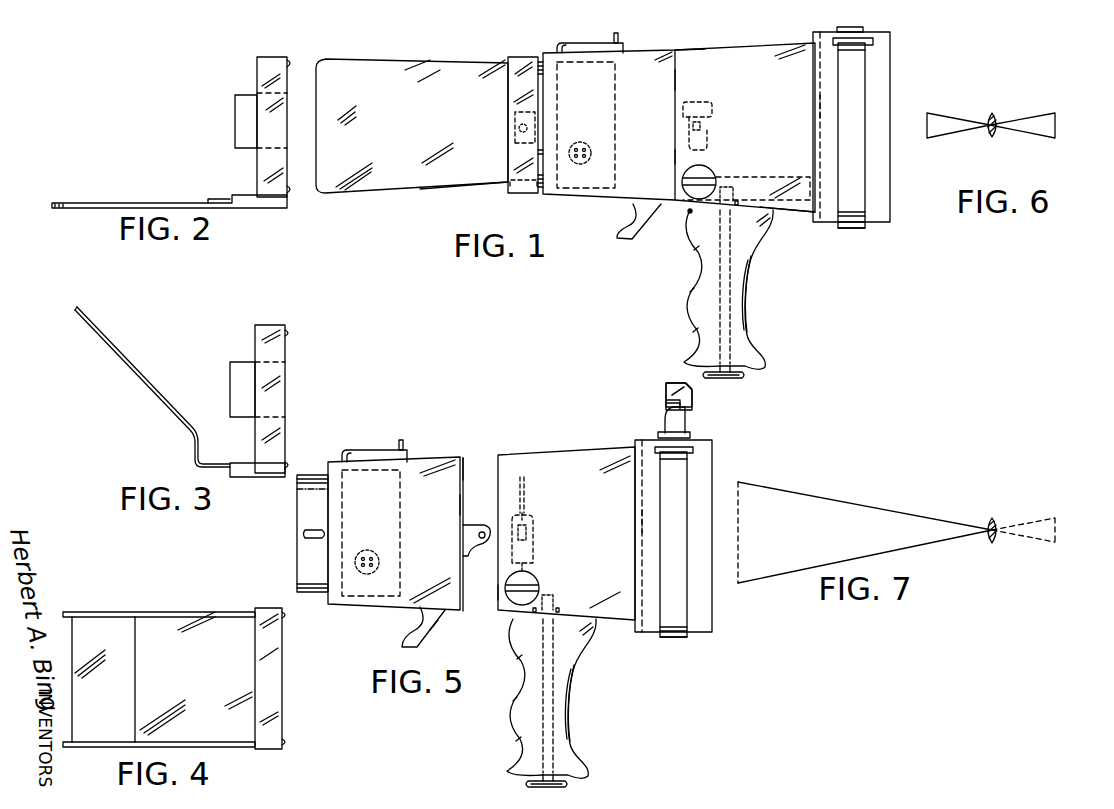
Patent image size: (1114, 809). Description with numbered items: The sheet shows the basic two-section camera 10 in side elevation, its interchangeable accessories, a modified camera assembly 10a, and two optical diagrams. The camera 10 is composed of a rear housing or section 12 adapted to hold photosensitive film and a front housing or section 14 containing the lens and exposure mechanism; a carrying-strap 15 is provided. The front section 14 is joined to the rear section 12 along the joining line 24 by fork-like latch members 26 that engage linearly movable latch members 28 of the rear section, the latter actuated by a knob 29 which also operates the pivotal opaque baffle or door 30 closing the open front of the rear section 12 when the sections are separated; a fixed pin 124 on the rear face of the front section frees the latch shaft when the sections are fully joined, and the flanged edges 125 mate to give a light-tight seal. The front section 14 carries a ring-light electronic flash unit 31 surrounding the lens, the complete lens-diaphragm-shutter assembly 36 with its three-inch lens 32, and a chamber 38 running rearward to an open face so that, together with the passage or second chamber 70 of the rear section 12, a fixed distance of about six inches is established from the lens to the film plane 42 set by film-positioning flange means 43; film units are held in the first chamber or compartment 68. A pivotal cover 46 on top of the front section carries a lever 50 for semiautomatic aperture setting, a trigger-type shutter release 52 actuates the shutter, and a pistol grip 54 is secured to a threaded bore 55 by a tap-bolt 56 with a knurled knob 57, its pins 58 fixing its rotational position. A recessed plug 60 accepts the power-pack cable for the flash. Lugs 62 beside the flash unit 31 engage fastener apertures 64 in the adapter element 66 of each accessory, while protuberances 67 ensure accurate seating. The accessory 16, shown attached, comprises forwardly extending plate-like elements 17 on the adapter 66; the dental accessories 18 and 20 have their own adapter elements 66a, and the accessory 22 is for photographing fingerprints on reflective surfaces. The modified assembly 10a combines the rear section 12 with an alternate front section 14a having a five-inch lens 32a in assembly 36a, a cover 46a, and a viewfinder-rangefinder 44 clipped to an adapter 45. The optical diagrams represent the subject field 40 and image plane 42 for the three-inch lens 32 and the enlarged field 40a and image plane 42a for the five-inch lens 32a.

In FIG. 1, the camera 10 is at (809, 249).
In FIG. 5, the camera assembly 10a is at (655, 668).
In FIG. 1, the rear housing or section 12 is at (812, 216).
In FIG. 5, the rear housing or section 12 is at (620, 619).
In FIG. 1, the front housing or section 14 is at (645, 44).
In FIG. 5, the alternate front section 14a is at (372, 607).
In FIG. 1, the carrying-strap 15 is at (850, 162).
In FIG. 5, the carrying-strap 15 is at (677, 490).
In FIG. 1, the accessory 16 is at (428, 195).
In FIG. 1, the plate-like elements 17 is at (342, 194).
In FIG. 2, the accessory 18 is at (179, 176).
In FIG. 3, the accessory 20 is at (150, 362).
In FIG. 4, the accessory 22 is at (167, 681).
In FIG. 1, the joining line 24 is at (678, 60).
In FIG. 1, the latch members 26 is at (713, 108).
In FIG. 5, the latch members 26 is at (478, 550).
In FIG. 1, the latch members 28 is at (708, 134).
In FIG. 5, the latch members 28 is at (535, 532).
In FIG. 1, the knob 29 is at (682, 180).
In FIG. 5, the knob 29 is at (539, 586).
In FIG. 1, the baffle or door 30 is at (805, 176).
In FIG. 5, the baffle or door 30 is at (526, 497).
In FIG. 1, the electronic flash unit 31 is at (510, 187).
In FIG. 5, the electronic flash unit 31 is at (310, 593).
In FIG. 6, the lens assembly 32 is at (989, 138).
In FIG. 7, the lens assembly 32a is at (991, 544).
In FIG. 1, the lens-diaphragm-shutter assembly 36 is at (617, 114).
In FIG. 5, the lens-diaphragm-shutter assembly 36a is at (402, 500).
In FIG. 1, the chamber 38 is at (684, 80).
In FIG. 5, the chamber 38 is at (468, 504).
In FIG. 6, the field area 40 is at (925, 121).
In FIG. 7, the field area 40a is at (740, 517).
In FIG. 1, the film plane 42 is at (820, 108).
In FIG. 6, the film plane 42 is at (1057, 136).
In FIG. 5, the image plane 42a is at (642, 526).
In FIG. 7, the image plane 42a is at (1043, 568).
In FIG. 1, the film-positioning flange means 43 is at (830, 30).
In FIG. 5, the film-positioning flange means 43 is at (648, 438).
In FIG. 1, the viewfinder-rangefinder 44 is at (663, 394).
In FIG. 5, the viewfinder-rangefinder 44 is at (663, 392).
In FIG. 1, the adapter or clip 45 is at (865, 26).
In FIG. 5, the adapter or clip 45 is at (688, 434).
In FIG. 1, the pivotal door or cover 46 is at (573, 43).
In FIG. 5, the pivotal door or cover 46a is at (376, 450).
In FIG. 1, the lever 50 is at (614, 34).
In FIG. 5, the lever 50 is at (400, 441).
In FIG. 1, the shutter release 52 is at (629, 216).
In FIG. 5, the shutter release 52 is at (414, 624).
In FIG. 1, the pistol grip 54 is at (756, 276).
In FIG. 5, the pistol grip 54 is at (578, 698).
In FIG. 1, the threaded bore 55 is at (735, 193).
In FIG. 5, the threaded bore 55 is at (555, 600).
In FIG. 1, the tap-bolt 56 is at (719, 273).
In FIG. 5, the tap-bolt 56 is at (519, 697).
In FIG. 1, the knurled knob 57 is at (740, 379).
In FIG. 5, the knurled knob 57 is at (524, 782).
In FIG. 1, the pins 58 is at (677, 217).
In FIG. 1, the recessed plug 60 is at (582, 142).
In FIG. 5, the recessed plug 60 is at (367, 550).
In FIG. 1, the lugs or knobs 62 is at (520, 129).
In FIG. 5, the lugs or knobs 62 is at (310, 533).
In FIG. 1, the fastener apertures or receptacles 64 is at (515, 114).
In FIG. 1, the adapter element 66 is at (516, 57).
In FIG. 4, the adapter element 66 is at (283, 656).
In FIG. 2, the adapter element 66a is at (257, 73).
In FIG. 3, the adapter element 66a is at (255, 350).
In FIG. 1, the protuberances 67 is at (540, 195).
In FIG. 2, the protuberances 67 is at (289, 58).
In FIG. 1, the first chamber or compartment 68 is at (872, 225).
In FIG. 5, the first chamber or compartment 68 is at (672, 638).
In FIG. 1, the passage or second chamber 70 is at (667, 157).
In FIG. 5, the passage or second chamber 70 is at (488, 590).
In FIG. 5, the fixed pin 124 is at (437, 622).
In FIG. 5, the flanged edge 125 is at (465, 462).